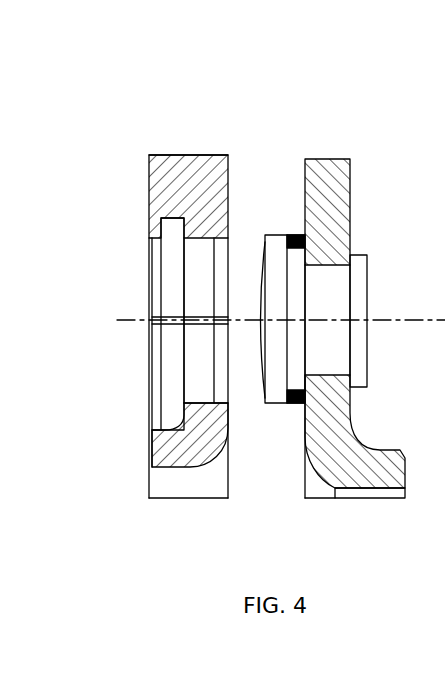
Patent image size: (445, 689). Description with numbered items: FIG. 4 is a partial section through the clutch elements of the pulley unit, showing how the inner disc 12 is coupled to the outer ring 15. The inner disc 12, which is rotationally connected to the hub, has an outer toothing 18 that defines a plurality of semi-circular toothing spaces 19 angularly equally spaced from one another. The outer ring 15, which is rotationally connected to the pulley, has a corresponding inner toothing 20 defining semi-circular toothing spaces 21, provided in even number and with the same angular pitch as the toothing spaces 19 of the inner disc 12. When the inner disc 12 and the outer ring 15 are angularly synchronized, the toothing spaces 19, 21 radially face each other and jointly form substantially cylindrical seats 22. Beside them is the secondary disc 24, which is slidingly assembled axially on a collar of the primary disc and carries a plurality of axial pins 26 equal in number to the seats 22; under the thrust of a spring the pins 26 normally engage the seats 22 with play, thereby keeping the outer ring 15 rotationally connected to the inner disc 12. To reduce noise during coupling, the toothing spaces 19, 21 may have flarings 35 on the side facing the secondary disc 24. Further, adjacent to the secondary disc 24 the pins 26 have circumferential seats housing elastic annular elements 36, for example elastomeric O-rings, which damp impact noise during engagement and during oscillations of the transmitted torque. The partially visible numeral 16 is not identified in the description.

The inner disc 12 is at (178, 450).
The outer ring 15 is at (200, 172).
The housing 16 is at (4, 446).
The outer toothing 18 is at (190, 333).
The toothing spaces 19 is at (203, 394).
The inner toothing 20 is at (197, 293).
The toothing spaces 21 is at (202, 248).
The seats 22 is at (194, 305).
The secondary disc 24 is at (328, 180).
The axial pins 26 is at (335, 352).
The flarings 35 is at (233, 243).
The elastic annular elements 36 is at (295, 235).